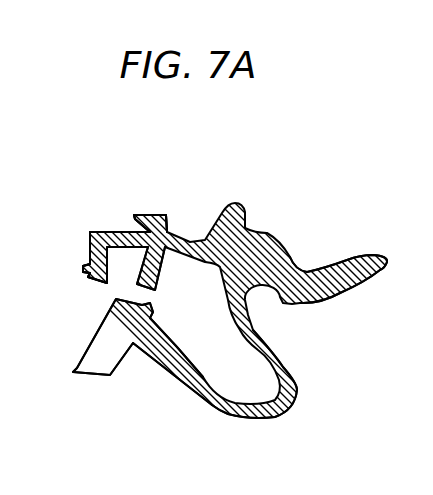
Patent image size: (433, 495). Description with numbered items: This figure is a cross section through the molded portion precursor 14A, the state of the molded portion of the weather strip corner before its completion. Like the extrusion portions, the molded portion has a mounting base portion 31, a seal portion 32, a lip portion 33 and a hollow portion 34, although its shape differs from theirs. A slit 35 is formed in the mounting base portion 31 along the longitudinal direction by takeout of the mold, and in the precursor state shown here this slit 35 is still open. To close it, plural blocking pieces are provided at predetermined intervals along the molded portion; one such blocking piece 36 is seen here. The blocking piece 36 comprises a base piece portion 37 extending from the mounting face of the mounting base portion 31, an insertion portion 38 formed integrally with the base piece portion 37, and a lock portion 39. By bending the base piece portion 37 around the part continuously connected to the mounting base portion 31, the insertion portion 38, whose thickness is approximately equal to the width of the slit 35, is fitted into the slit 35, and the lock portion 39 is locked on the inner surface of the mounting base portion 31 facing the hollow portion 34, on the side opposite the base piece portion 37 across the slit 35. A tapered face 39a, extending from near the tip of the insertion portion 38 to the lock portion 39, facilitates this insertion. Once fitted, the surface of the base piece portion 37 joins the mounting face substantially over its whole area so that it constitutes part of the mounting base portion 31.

The molded portion precursor 14A is at (280, 194).
The blocking piece 36 is at (83, 214).
The base piece portion 37 is at (98, 232).
The insertion portion 38 is at (88, 250).
The lock portion 39 is at (81, 270).
The tapered face 39a is at (89, 280).
The mounting base portion 31 is at (98, 336).
The seal portion 32 is at (255, 420).
The lip portion 33 is at (358, 254).
The hollow portion 34 is at (227, 373).
The slit 35 is at (153, 306).